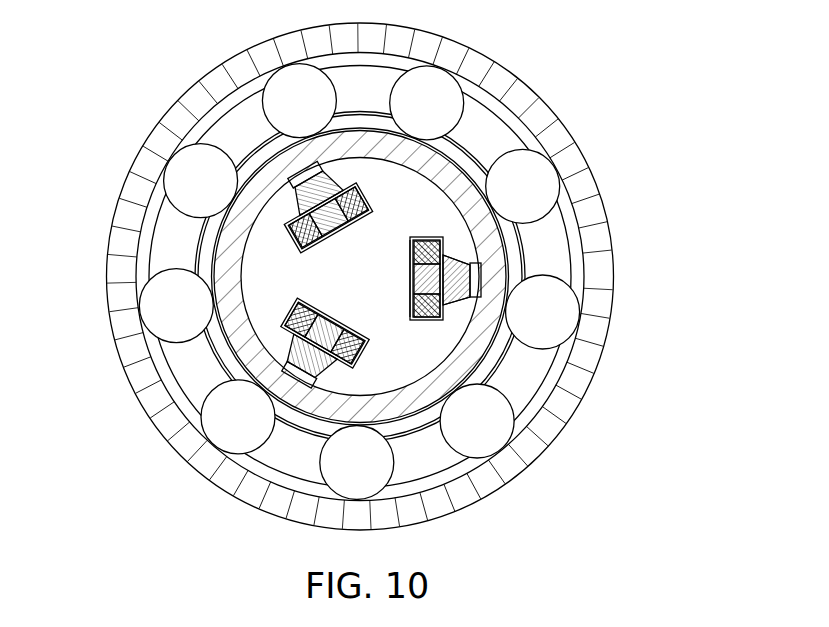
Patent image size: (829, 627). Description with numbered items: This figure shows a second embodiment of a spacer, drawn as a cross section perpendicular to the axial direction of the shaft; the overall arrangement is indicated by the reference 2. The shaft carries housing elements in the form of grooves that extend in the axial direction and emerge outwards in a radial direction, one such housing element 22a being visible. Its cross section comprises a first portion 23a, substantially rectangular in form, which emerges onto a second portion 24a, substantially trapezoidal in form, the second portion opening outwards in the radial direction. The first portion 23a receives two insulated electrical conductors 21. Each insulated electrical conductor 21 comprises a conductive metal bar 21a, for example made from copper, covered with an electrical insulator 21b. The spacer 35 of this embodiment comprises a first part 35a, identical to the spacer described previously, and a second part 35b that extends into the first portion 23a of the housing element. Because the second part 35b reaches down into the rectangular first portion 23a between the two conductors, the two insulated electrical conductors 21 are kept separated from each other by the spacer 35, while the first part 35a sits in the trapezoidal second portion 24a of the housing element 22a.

The rolling bearing 2 is at (401, 292).
The insulated electrical conductor 21 is at (410, 237).
The conductive metal bar 21a is at (417, 238).
The electrical insulator 21b is at (410, 268).
The housing element 22a is at (550, 424).
The first portion 23a is at (435, 229).
The second portion 24a is at (459, 246).
The spacer 35 is at (452, 312).
The first part 35a is at (492, 289).
The second part 35b is at (403, 282).